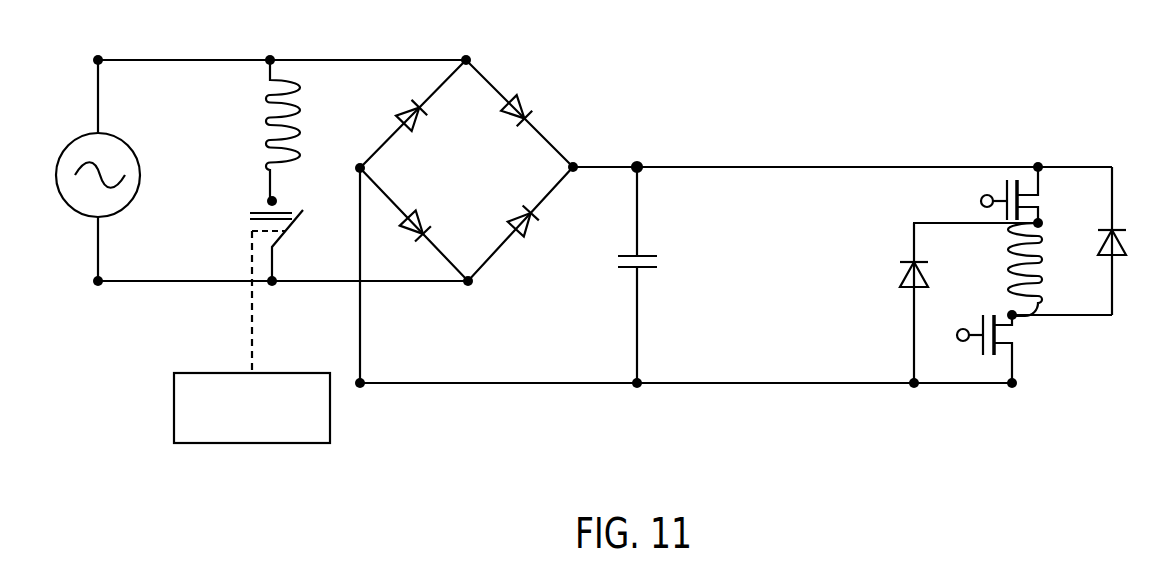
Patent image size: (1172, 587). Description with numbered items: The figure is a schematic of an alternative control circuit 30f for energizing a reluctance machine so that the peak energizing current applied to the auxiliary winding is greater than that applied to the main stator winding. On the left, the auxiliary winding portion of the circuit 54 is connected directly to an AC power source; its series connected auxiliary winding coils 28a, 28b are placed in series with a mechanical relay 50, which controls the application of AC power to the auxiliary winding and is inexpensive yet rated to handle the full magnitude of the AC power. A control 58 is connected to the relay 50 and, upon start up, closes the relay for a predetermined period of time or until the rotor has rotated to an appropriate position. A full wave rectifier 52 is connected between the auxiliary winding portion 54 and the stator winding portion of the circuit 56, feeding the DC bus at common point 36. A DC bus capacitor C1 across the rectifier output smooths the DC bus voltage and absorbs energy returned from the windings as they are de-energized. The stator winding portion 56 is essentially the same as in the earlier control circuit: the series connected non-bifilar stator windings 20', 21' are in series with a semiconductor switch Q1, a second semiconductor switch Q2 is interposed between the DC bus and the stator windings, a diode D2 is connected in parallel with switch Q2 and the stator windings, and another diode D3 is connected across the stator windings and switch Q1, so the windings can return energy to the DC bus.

The control circuit 30f is at (845, 94).
The auxiliary winding portion of the circuit 54 is at (317, 47).
The auxiliary winding coil 28a is at (221, 130).
The auxiliary winding coil 28b is at (270, 120).
The mechanical relay 50 is at (295, 233).
The control 58 is at (270, 373).
The full wave rectifier 52 is at (492, 80).
The common point 36 is at (636, 161).
The stator winding portion of the circuit 56 is at (1115, 428).
The DC bus capacitor C1 is at (630, 268).
The second semiconductor switch Q2 is at (1000, 192).
The semiconductor switch Q1 is at (982, 347).
The stator winding 20' is at (992, 269).
The stator winding 21' is at (1025, 269).
The diode D3 is at (907, 285).
The diode D2 is at (1107, 255).